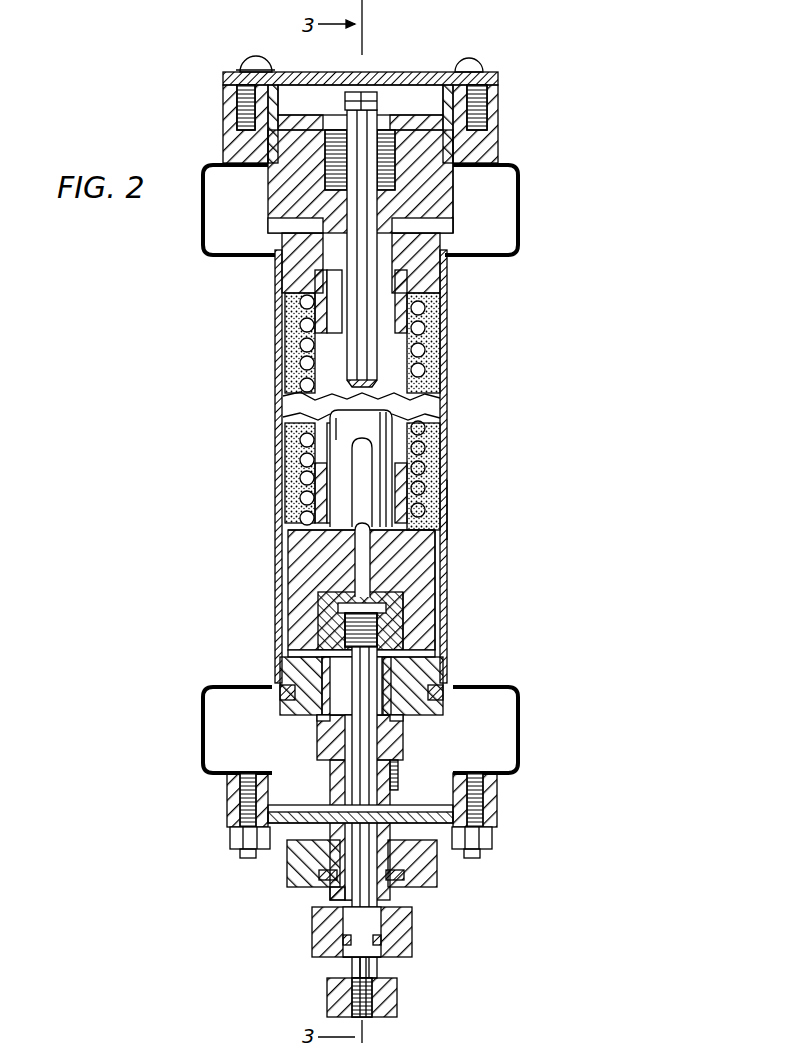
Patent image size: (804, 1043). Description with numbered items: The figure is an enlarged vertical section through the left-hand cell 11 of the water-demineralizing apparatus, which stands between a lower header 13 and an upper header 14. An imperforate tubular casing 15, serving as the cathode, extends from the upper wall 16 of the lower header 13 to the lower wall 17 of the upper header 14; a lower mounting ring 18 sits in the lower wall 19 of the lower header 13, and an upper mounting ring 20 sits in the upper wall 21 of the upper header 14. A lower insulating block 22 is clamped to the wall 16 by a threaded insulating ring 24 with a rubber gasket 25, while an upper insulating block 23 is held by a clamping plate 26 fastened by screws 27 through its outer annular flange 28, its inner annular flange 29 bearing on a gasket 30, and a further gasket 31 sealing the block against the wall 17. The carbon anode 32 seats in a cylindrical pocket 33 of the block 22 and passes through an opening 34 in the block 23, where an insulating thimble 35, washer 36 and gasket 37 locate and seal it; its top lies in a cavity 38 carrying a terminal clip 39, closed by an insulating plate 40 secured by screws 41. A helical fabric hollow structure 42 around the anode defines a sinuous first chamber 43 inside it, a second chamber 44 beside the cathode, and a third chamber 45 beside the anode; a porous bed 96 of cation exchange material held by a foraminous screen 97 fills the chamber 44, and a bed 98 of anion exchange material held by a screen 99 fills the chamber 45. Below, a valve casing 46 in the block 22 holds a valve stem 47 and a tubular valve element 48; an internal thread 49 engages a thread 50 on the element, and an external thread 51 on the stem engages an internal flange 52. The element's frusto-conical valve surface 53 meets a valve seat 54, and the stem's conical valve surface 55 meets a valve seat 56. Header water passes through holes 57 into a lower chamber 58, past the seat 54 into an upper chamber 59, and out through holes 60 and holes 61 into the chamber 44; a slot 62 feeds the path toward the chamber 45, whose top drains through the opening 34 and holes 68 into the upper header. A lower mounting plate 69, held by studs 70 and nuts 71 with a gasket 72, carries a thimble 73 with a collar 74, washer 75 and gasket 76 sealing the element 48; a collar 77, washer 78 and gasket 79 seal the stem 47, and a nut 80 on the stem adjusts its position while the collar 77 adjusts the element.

The cell 11 is at (497, 373).
The lower header 13 is at (520, 738).
The upper header 14 is at (520, 220).
The tubular casing 15 is at (467, 510).
The upper wall 16 is at (504, 723).
The lower wall 17 is at (225, 223).
The lower mounting ring 18 is at (498, 800).
The lower wall 19 is at (247, 789).
The upper mounting ring 20 is at (496, 124).
The upper wall 21 is at (245, 140).
The lower insulating block 22 is at (400, 590).
The upper insulating block 23 is at (478, 198).
The insulating ring 24 is at (247, 730).
The rubber gasket 25 is at (384, 679).
The clamping plate 26 is at (269, 82).
The screws 27 is at (485, 82).
The annular flange 28 is at (496, 119).
The annular flange 29 is at (360, 108).
The rubber gasket 30 is at (227, 124).
The rubber gasket 31 is at (340, 466).
The rod-like element 32 is at (311, 466).
The cylindrical pocket 33 is at (279, 483).
The opening 34 is at (340, 283).
The insulating thimble 35 is at (360, 134).
The annular washer 36 is at (286, 174).
The rubber gasket 37 is at (436, 174).
The annular cavity 38 is at (377, 75).
The metal clip 39 is at (370, 211).
The insulating plate 40 is at (360, 60).
The screws 41 is at (247, 52).
The hollow structure 42 is at (460, 343).
The first chamber 43 is at (275, 343).
The second chamber 44 is at (316, 479).
The third chamber 45 is at (288, 329).
The valve casing 46 is at (312, 621).
The valve stem 47 is at (399, 812).
The valve element 48 is at (295, 863).
The internal thread 49 is at (341, 807).
The thread 50 is at (424, 770).
The external thread 51 is at (440, 621).
The internal flange 52 is at (304, 596).
The frusto-conical valve surface 53 is at (332, 684).
The valve seat 54 is at (332, 650).
The conical valve surface 55 is at (385, 559).
The valve seat 56 is at (295, 561).
The holes 57 is at (299, 728).
The lower chamber 58 is at (435, 715).
The upper chamber 59 is at (434, 636).
The holes 60 is at (421, 630).
The holes 61 is at (435, 639).
The upstanding slot 62 is at (458, 590).
The holes 68 is at (362, 231).
The lower mounting plate 69 is at (222, 831).
The studs 70 is at (485, 868).
The nuts 71 is at (497, 842).
The rubber gasket 72 is at (407, 815).
The annular thimble 73 is at (424, 866).
The collar 74 is at (288, 893).
The annular washer 75 is at (310, 910).
The rubber gasket 76 is at (413, 896).
The collar 77 is at (381, 936).
The annular washer 78 is at (325, 948).
The rubber gasket 79 is at (335, 972).
The nut 80 is at (385, 987).
The first porous bed 96 is at (388, 398).
The foraminous screen 97 is at (359, 476).
The second porous bed 98 is at (387, 418).
The foraminous screen 99 is at (455, 409).